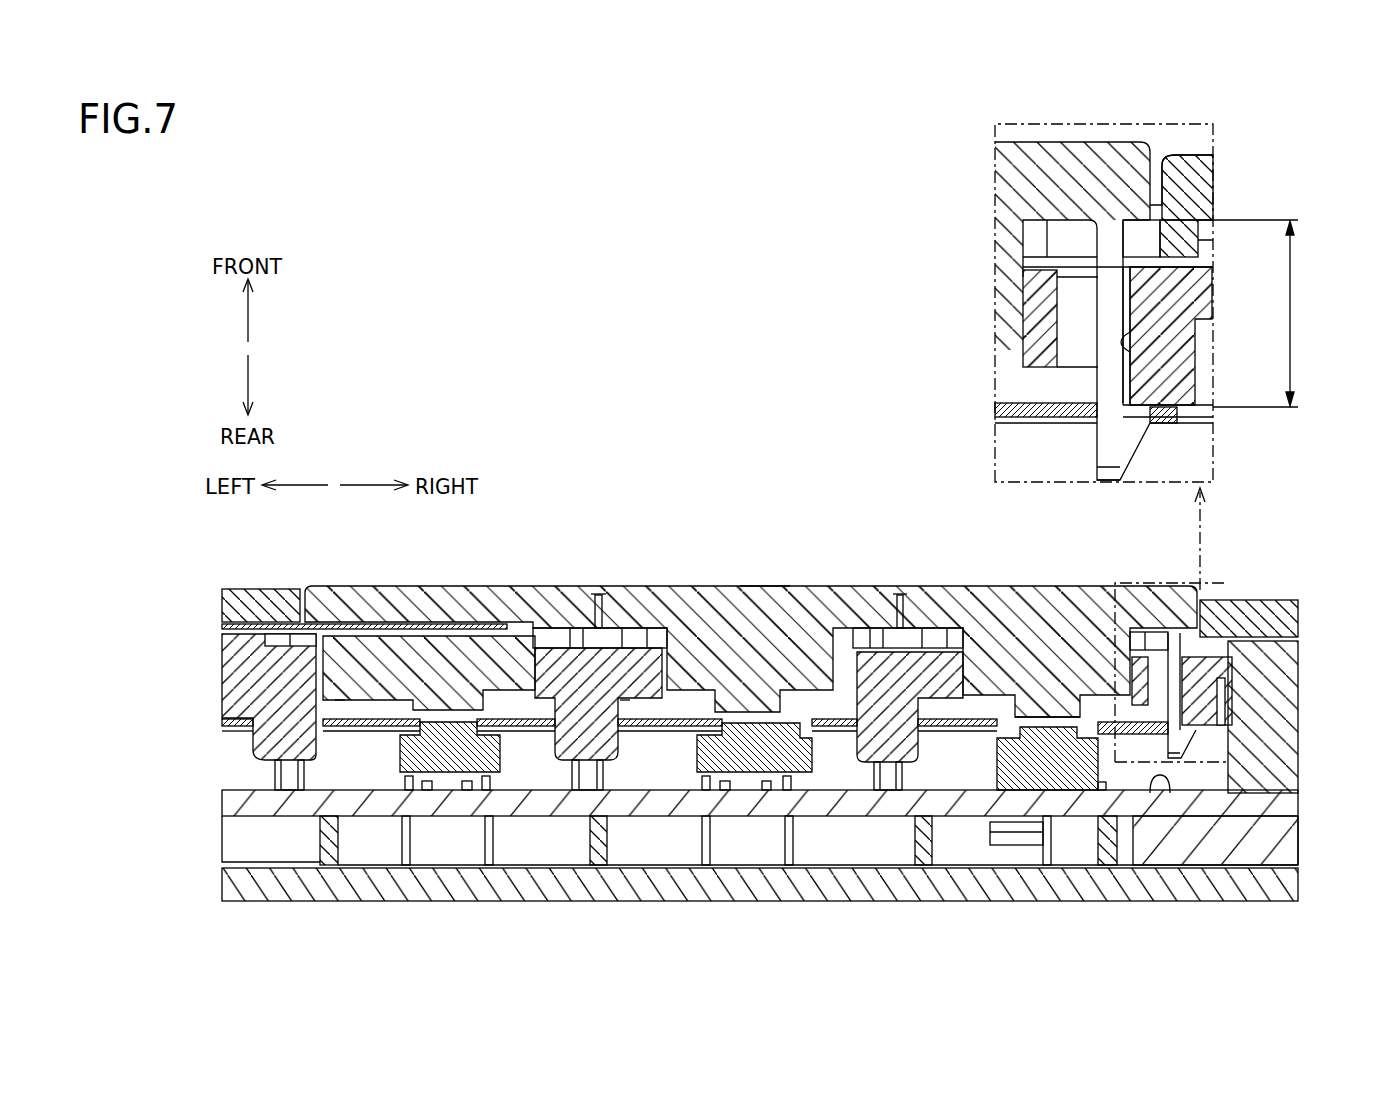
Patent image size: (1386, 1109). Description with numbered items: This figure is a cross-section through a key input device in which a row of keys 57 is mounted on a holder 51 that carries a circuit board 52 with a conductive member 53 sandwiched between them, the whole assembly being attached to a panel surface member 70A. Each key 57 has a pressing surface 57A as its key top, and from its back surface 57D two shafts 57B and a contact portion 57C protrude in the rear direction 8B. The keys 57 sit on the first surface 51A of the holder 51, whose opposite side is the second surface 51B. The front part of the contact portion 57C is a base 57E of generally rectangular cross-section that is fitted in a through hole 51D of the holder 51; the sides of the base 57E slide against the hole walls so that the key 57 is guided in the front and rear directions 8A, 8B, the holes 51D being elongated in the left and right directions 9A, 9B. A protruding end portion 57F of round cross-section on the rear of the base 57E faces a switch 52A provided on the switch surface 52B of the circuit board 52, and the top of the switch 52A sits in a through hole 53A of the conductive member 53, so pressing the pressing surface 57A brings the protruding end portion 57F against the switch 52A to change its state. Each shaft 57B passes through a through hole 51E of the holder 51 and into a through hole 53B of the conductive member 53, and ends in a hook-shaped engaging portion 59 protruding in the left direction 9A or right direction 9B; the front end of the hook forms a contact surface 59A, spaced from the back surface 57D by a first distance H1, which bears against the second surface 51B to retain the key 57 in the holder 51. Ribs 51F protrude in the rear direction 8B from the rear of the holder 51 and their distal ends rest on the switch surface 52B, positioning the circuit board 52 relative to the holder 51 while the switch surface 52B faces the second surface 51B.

The front direction 8A is at (252, 318).
The rear direction 8B is at (252, 380).
The left direction 9A is at (304, 484).
The right direction 9B is at (367, 484).
The holder 51 is at (344, 634).
The first surface 51A is at (1243, 630).
The second surface 51B is at (343, 705).
The through hole 51D is at (343, 665).
The through hole 51E is at (1130, 350).
The rib 51F is at (275, 771).
The circuit board 52 is at (1308, 806).
The switch 52A is at (405, 774).
The switch surface 52B is at (1166, 793).
The conductive member 53 is at (975, 719).
The through hole 53A is at (400, 629).
The through hole 53B is at (1085, 410).
The key 57 is at (803, 520).
The pressing surface 57A is at (760, 586).
The shaft 57B is at (599, 595).
The contact portion 57C is at (1084, 793).
The back surface 57D is at (787, 742).
The base 57E is at (1048, 680).
The protruding end portion 57F is at (997, 733).
The engaging portion 59 is at (1097, 444).
The contact surface 59A is at (1150, 405).
The panel surface member 70A is at (255, 589).
The first distance H1 is at (1255, 313).